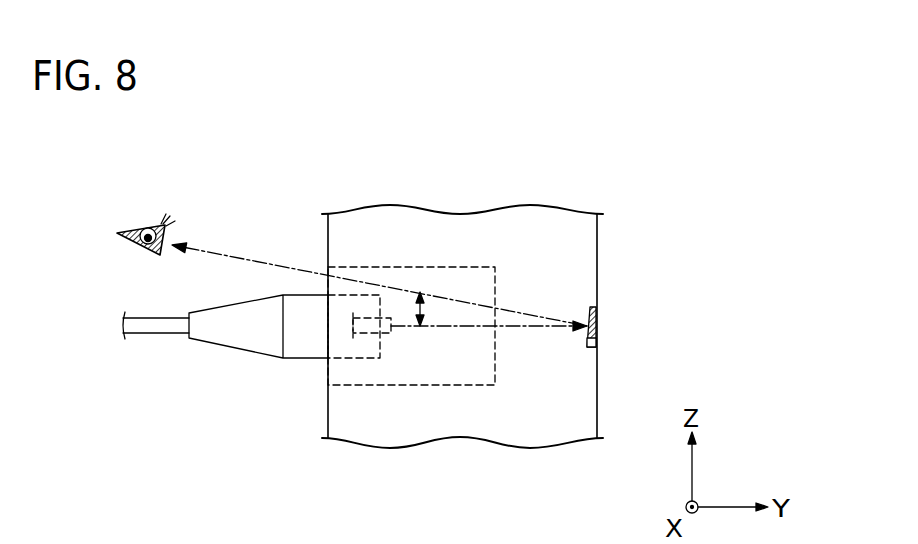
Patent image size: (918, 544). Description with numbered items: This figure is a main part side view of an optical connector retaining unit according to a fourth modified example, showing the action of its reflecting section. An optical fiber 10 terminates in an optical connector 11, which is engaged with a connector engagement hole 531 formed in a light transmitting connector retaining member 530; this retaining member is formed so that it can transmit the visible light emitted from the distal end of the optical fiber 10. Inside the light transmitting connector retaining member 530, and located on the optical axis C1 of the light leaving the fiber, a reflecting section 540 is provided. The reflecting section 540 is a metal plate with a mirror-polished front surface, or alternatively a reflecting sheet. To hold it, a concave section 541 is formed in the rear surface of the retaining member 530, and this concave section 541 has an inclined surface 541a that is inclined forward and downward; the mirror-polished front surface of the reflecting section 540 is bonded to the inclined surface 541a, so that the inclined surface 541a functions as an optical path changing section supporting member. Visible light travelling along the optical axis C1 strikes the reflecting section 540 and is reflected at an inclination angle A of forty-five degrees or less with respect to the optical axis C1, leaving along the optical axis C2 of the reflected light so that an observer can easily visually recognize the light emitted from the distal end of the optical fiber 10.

The optical fiber 10 is at (152, 339).
The optical connector 11 is at (297, 360).
The light transmitting connector retaining member 530 is at (322, 244).
The connector engagement hole 531 is at (338, 379).
The reflecting section 540 is at (674, 329).
The concave section 541 is at (682, 337).
The inclined surface 541a is at (597, 337).
The inclination angle A is at (416, 300).
The optical axis C1 is at (435, 328).
The optical axis of reflected light C2 is at (240, 258).